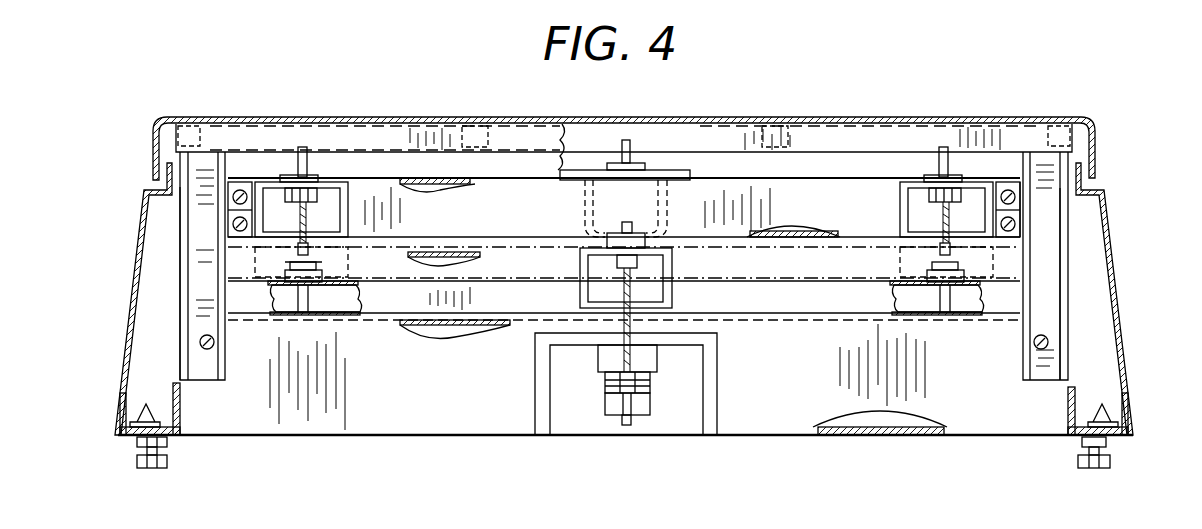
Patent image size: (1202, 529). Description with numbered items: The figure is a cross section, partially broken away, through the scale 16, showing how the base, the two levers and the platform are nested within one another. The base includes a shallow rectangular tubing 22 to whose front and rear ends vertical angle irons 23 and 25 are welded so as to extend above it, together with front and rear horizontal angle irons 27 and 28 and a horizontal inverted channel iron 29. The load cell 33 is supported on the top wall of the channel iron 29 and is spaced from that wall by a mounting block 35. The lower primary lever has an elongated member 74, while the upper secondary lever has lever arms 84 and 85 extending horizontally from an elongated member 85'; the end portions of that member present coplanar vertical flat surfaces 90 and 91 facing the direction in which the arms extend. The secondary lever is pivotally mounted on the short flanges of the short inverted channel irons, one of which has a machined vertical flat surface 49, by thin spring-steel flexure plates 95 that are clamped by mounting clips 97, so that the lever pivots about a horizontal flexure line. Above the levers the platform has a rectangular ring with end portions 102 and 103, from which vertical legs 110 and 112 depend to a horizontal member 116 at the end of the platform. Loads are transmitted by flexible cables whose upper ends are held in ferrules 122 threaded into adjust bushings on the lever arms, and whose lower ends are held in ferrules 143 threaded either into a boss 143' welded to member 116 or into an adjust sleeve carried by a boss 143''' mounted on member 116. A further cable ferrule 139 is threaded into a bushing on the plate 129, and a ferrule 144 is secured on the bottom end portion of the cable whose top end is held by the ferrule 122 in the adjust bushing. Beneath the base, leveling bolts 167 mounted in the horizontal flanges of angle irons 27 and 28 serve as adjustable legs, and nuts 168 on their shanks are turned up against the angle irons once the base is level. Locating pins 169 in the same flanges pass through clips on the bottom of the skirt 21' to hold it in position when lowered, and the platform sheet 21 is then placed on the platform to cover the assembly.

The scale 16 is at (168, 83).
The platform sheet 21 is at (646, 146).
The skirt 21' is at (629, 299).
The shallow rectangular tubing 22 is at (418, 436).
The vertical angle iron 23 is at (1066, 316).
The vertical angle iron 25 is at (180, 300).
The front horizontal angle iron 27 is at (1072, 392).
The rear horizontal angle iron 28 is at (176, 392).
The horizontal inverted channel iron 29 is at (718, 386).
The load cell 33 is at (650, 383).
The mounting block 35 is at (661, 364).
The vertical flat surface 49 is at (260, 123).
The elongated member 74 is at (450, 251).
The lever arm 84 is at (350, 218).
The lever arm 85 is at (922, 209).
The elongated member 85' is at (624, 163).
The vertical flat surface 90 is at (228, 240).
The vertical flat surface 91 is at (1018, 240).
The flexure plate 95 is at (246, 210).
The mounting clip 97 is at (240, 188).
The end portion 102 is at (862, 125).
The end portion 103 is at (340, 125).
The vertical leg 110 is at (1058, 244).
The vertical leg 112 is at (192, 330).
The horizontal member 116 is at (490, 280).
The flexible cable ferrule 122 is at (307, 167).
The plate 129 is at (688, 175).
The cable ferrule 139 is at (632, 150).
The ferrule 143 is at (463, 296).
The boss 143' is at (340, 262).
The boss 143''' is at (945, 300).
The ferrule 144 is at (650, 405).
The leveling bolt 167 is at (168, 462).
The nut 168 is at (168, 442).
The locating pin 169 is at (1116, 414).